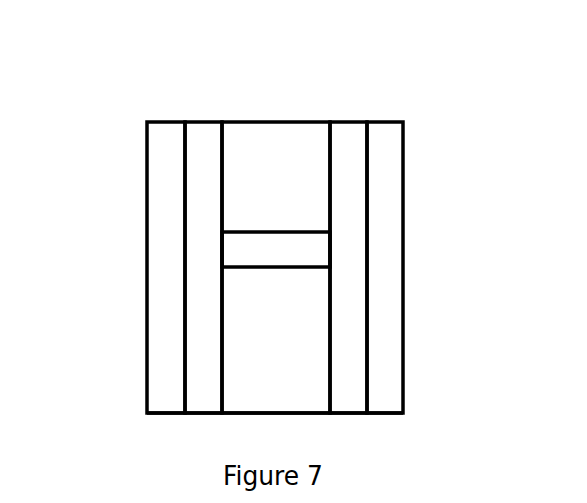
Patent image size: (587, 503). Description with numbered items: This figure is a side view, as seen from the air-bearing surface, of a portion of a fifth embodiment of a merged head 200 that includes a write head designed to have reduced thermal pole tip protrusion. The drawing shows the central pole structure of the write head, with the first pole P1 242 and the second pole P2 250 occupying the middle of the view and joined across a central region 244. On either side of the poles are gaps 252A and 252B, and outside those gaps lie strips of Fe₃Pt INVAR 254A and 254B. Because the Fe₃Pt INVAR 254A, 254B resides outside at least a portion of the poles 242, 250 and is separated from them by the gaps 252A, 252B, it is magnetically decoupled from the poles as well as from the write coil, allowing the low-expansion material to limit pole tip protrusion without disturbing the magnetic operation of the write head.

The merged head 200 is at (274, 241).
The P1 242 is at (273, 413).
The channel 244 is at (330, 250).
The P2 250 is at (276, 122).
The gap 252A is at (200, 413).
The gap 252B is at (347, 122).
The Fe₃Pt INVAR 254A is at (147, 190).
The Fe₃Pt INVAR 254B is at (403, 170).